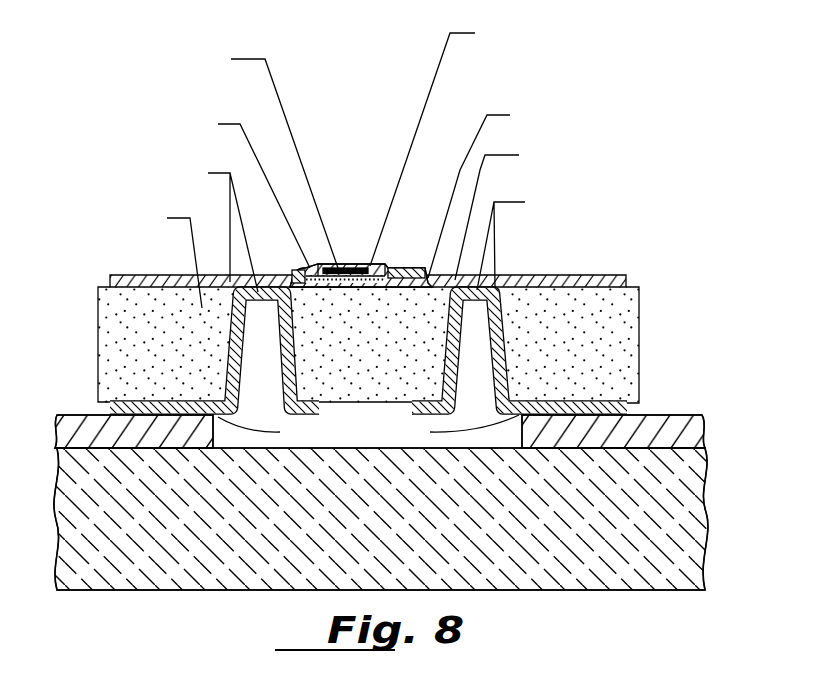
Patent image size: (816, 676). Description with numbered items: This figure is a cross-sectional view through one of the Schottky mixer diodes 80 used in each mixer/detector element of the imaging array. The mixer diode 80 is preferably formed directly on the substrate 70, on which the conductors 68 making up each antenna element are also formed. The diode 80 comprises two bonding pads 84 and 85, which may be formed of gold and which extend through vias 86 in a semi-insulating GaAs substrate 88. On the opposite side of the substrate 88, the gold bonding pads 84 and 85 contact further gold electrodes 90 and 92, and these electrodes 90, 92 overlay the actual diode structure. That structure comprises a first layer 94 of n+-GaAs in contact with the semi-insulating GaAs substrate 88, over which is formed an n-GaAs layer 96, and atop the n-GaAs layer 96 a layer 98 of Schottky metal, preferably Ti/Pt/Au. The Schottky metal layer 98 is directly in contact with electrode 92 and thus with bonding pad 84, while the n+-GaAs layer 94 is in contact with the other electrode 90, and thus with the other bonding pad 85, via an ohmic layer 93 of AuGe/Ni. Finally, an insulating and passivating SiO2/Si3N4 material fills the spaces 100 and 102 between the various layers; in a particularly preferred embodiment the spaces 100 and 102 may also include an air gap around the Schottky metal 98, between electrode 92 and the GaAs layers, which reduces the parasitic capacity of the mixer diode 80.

The conductors 68 is at (75, 428).
The substrate 70 is at (100, 510).
The mixer diode 80 is at (689, 252).
The bonding pad 84 is at (243, 402).
The bonding pad 85 is at (502, 388).
The vias 86 is at (498, 347).
The semi-insulating GaAs substrate 88 is at (634, 340).
The electrode 90 is at (574, 277).
The electrode 92 is at (115, 277).
The ohmic layer 93 is at (687, 155).
The n+-GaAs layer 94 is at (609, 112).
The n-GaAs layer 96 is at (567, 32).
The Schottky metal layer 98 is at (67, 61).
The space 100 is at (92, 118).
The space 102 is at (395, 275).